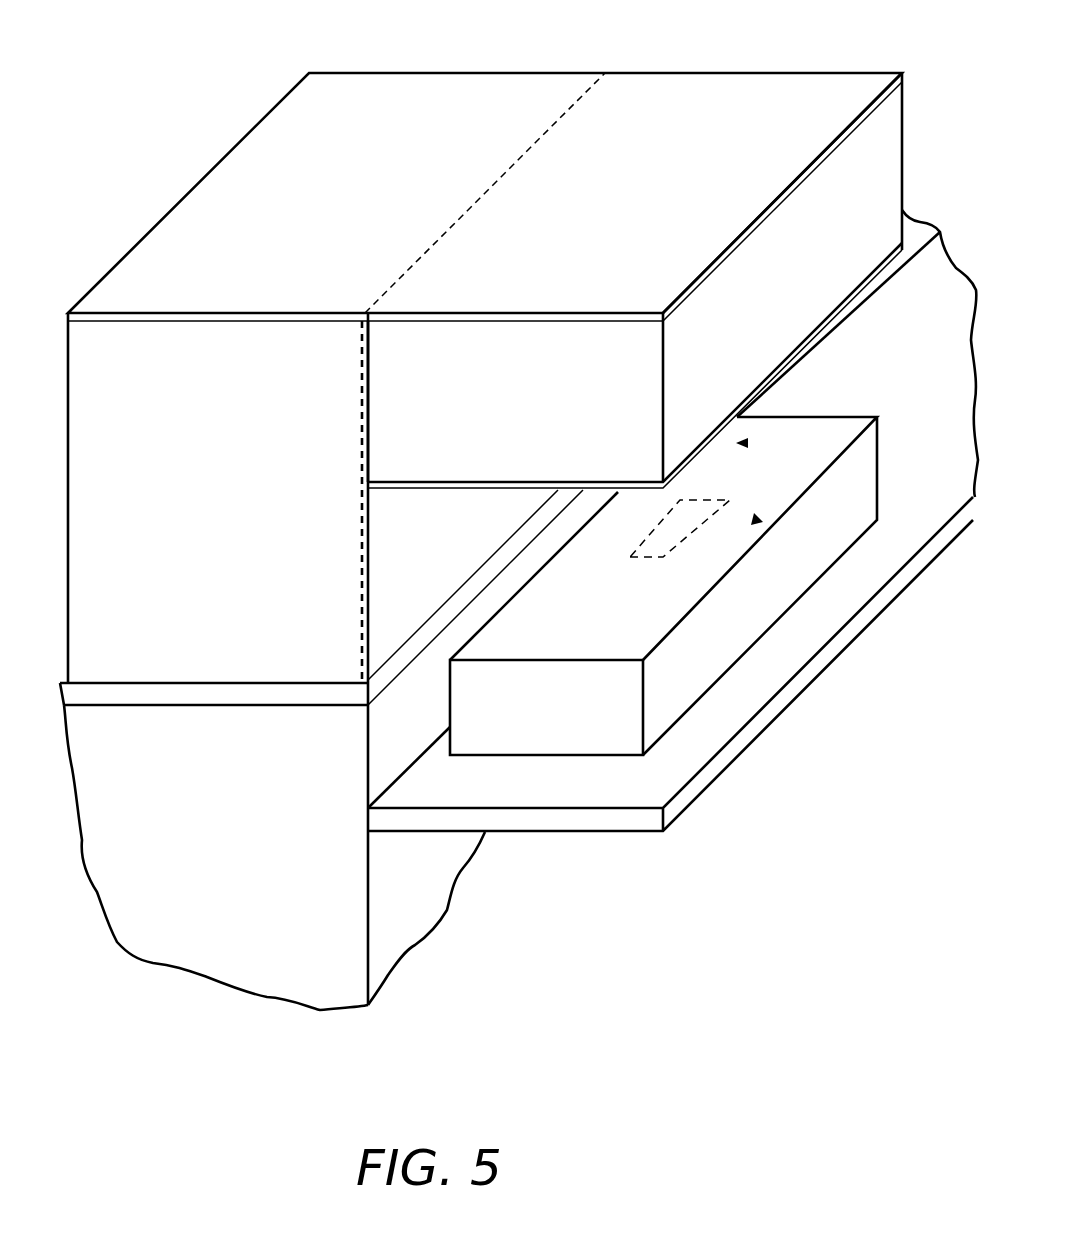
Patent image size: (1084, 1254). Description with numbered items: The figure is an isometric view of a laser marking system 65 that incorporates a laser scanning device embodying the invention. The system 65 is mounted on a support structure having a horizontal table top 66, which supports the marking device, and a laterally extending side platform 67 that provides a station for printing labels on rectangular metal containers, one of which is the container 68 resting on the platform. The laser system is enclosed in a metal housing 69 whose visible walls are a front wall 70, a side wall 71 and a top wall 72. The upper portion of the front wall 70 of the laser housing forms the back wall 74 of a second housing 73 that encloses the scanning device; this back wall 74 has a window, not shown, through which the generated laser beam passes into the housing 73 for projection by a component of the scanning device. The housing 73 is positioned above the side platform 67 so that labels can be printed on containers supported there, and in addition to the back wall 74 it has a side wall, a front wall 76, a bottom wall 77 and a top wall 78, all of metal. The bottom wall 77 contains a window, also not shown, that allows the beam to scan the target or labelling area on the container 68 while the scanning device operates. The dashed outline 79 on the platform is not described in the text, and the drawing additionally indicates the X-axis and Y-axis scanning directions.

The laser marking system 65 is at (910, 155).
The horizontal table top 66 is at (330, 707).
The side platform 67 is at (683, 815).
The container 68 is at (672, 722).
The housing 69 is at (266, 567).
The front wall 70 is at (386, 667).
The side wall 71 is at (68, 575).
The top wall 72 is at (231, 318).
The housing 73 is at (547, 392).
The back wall 74 is at (370, 424).
The front wall 76 is at (903, 197).
The bottom wall 77 is at (739, 405).
The top wall 78 is at (727, 250).
The aperture 79 is at (710, 508).